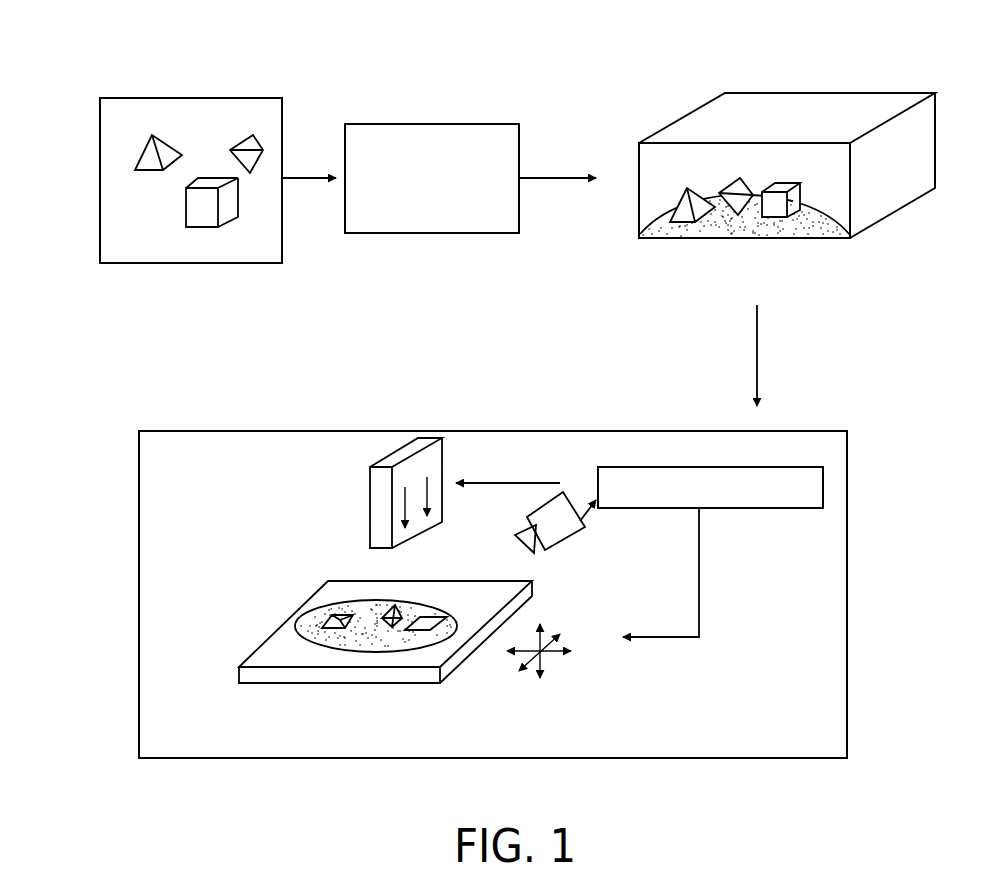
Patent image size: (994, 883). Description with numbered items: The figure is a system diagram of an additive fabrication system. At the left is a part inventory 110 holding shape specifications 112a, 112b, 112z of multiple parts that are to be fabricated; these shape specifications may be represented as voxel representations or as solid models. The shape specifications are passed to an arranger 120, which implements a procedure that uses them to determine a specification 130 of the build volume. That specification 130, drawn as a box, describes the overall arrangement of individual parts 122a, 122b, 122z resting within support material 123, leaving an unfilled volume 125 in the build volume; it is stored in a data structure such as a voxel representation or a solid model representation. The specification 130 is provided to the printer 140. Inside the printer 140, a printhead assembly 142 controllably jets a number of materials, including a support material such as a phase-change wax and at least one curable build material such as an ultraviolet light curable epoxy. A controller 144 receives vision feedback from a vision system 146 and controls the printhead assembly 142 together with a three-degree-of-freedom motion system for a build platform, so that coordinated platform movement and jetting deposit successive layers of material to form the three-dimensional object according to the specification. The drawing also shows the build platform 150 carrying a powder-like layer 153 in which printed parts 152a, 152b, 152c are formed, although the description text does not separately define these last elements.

The part inventory 110 is at (283, 97).
The shape specification 112a is at (135, 165).
The shape specification 112b is at (262, 157).
The shape specification 112z is at (207, 228).
The arranger 120 is at (436, 123).
The unfilled volume 125 is at (668, 162).
The specification of the build volume 130 is at (888, 99).
The individual part 122a is at (692, 225).
The individual part 122b is at (740, 220).
The individual part 122z is at (782, 218).
The support material 123 is at (845, 236).
The printer 140 is at (600, 430).
The printhead assembly 142 is at (443, 458).
The controller 144 is at (737, 509).
The vision system 146 is at (553, 548).
The build platform 150 is at (287, 658).
The powder layer 153 is at (315, 638).
The printed part 152a is at (343, 638).
The printed part 152b is at (392, 628).
The printed part 152c is at (427, 637).